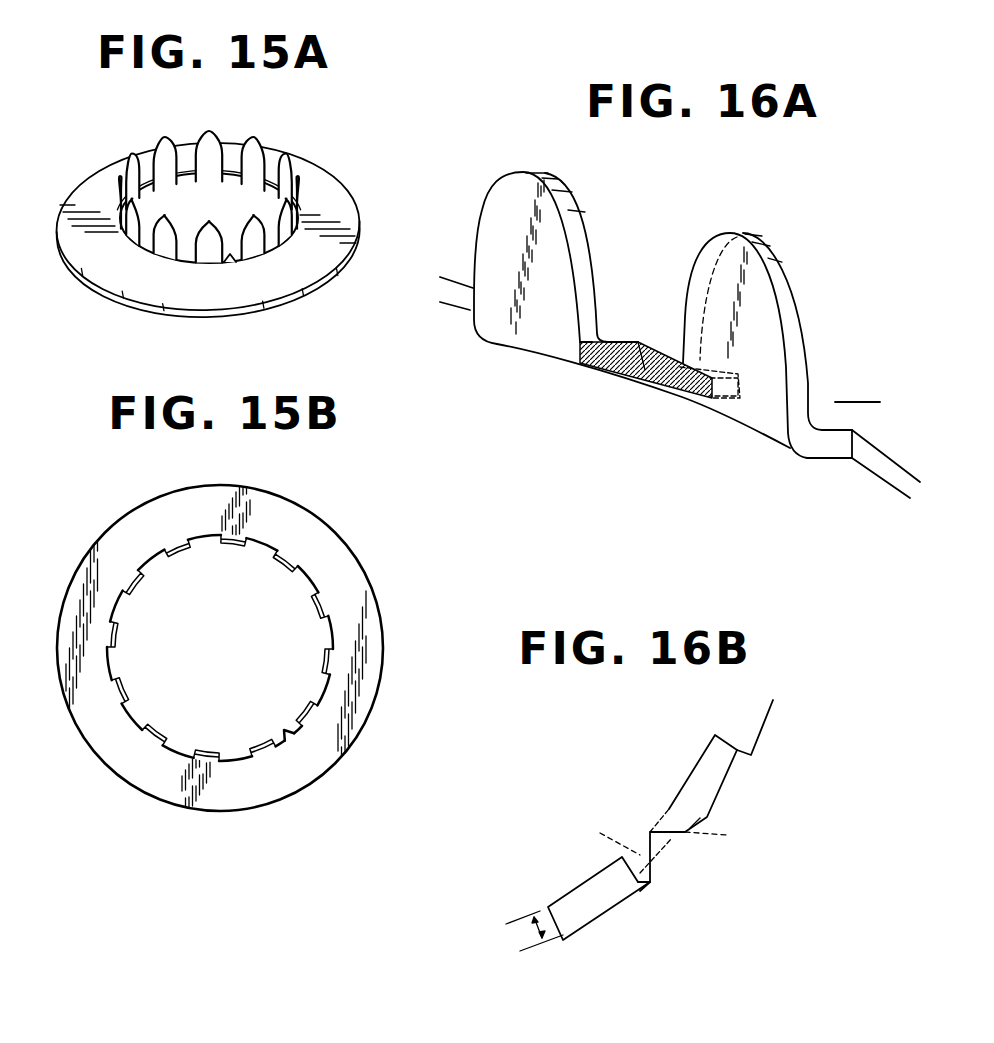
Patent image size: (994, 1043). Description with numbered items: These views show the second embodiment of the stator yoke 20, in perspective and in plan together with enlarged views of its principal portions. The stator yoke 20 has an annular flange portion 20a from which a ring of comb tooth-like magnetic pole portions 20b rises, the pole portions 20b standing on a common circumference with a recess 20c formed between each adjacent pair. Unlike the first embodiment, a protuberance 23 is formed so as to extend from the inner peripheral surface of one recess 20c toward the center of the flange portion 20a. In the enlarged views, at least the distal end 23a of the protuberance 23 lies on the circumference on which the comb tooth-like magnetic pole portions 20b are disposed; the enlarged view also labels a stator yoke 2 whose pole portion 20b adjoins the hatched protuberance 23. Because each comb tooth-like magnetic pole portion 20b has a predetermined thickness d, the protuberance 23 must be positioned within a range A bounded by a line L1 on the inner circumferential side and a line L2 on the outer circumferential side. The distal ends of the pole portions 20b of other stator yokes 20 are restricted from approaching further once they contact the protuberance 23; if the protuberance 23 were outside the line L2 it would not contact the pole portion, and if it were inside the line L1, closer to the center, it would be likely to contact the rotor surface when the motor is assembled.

In FIG. 16A, the stator yoke 2 is at (780, 281).
In FIG. 15A, the stator yoke 20 is at (287, 142).
In FIG. 15B, the stator yoke 20 is at (317, 513).
In FIG. 15A, the flange portion 20a is at (337, 207).
In FIG. 15B, the flange portion 20a is at (127, 538).
In FIG. 16A, the flange portion 20a is at (661, 362).
In FIG. 16B, the flange portion 20a is at (610, 910).
In FIG. 15A, the comb tooth-like magnetic pole portion 20b is at (295, 172).
In FIG. 15B, the comb tooth-like magnetic pole portion 20b is at (130, 587).
In FIG. 16A, the comb tooth-like magnetic pole portion 20b is at (572, 202).
In FIG. 16B, the comb tooth-like magnetic pole portion 20b is at (588, 907).
In FIG. 15B, the recess 20c is at (145, 557).
In FIG. 16A, the recess 20c is at (851, 462).
In FIG. 16B, the recess 20c is at (649, 888).
In FIG. 15A, the protuberance 23 is at (231, 263).
In FIG. 15B, the protuberance 23 is at (290, 740).
In FIG. 16A, the protuberance 23 is at (648, 343).
In FIG. 16B, the protuberance 23 is at (662, 843).
In FIG. 16B, the distal end 23a is at (650, 832).
In FIG. 16A, the range A is at (612, 373).
In FIG. 16B, the range A is at (640, 855).
In FIG. 16B, the line on the inner circumferential side L1 is at (603, 838).
In FIG. 16B, the line on the outer circumferential side L2 is at (723, 836).
In FIG. 16B, the thickness d is at (534, 931).